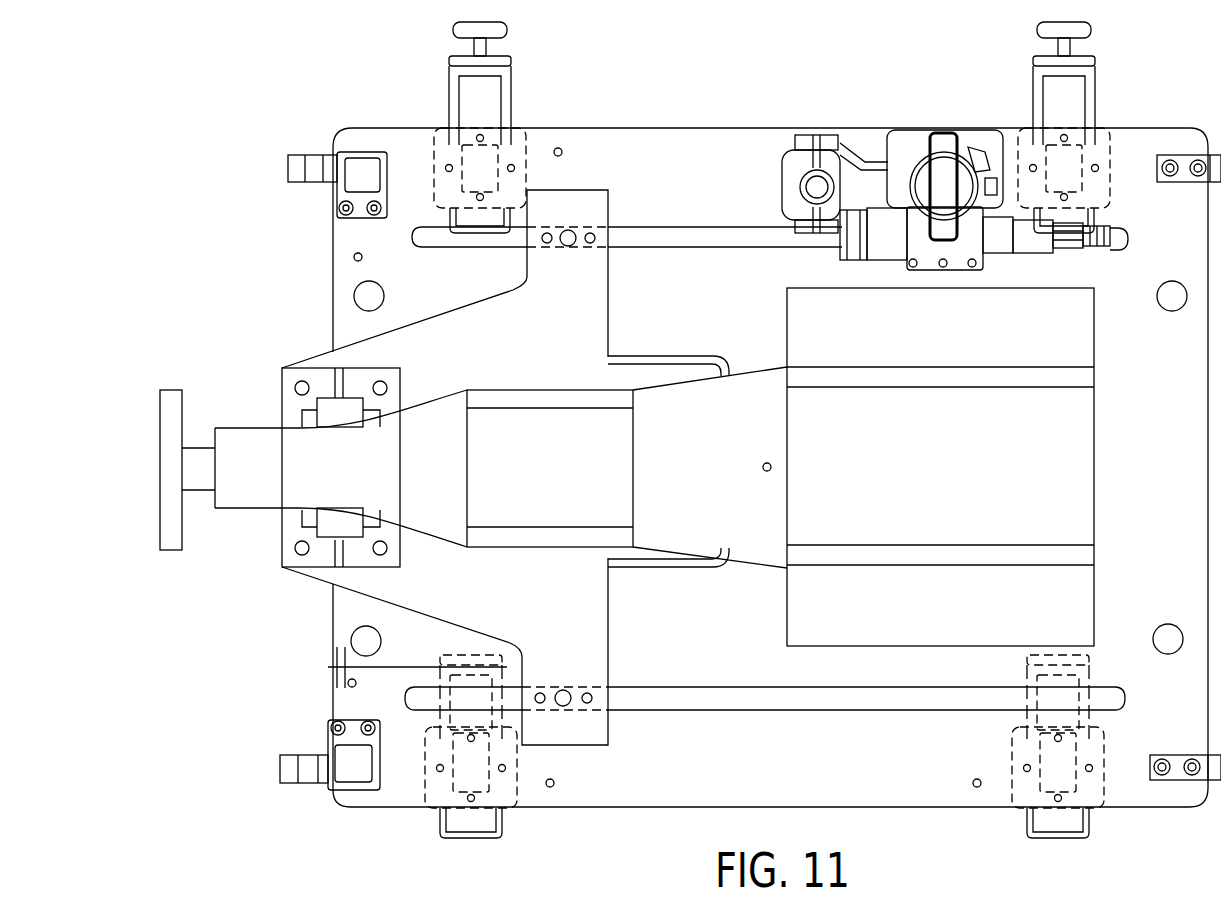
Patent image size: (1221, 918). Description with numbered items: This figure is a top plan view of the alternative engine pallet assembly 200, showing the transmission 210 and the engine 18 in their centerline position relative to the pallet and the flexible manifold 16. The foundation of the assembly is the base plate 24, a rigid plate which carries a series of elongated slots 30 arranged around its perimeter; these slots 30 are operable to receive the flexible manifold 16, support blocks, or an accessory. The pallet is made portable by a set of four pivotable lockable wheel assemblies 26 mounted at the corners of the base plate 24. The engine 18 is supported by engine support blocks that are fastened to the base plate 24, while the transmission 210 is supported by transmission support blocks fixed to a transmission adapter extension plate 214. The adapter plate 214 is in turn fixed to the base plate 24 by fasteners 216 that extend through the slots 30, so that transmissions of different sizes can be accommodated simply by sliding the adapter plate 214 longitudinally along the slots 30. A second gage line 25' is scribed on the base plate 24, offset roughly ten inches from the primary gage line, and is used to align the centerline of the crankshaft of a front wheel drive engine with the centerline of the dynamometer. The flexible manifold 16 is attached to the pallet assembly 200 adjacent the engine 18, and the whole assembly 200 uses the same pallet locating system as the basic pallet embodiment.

The alternative engine pallet assembly 200 is at (723, 110).
The base plate 24 is at (882, 782).
The pivotable lockable wheel assemblies 26 is at (517, 47).
The elongated slots 30 is at (722, 708).
The second gage line 25' is at (363, 694).
The fasteners 216 is at (567, 233).
The transmission adapter extension plate 214 is at (502, 330).
The transmission 210 is at (577, 481).
The engine 18 is at (982, 477).
The flexible manifold 16 is at (895, 180).